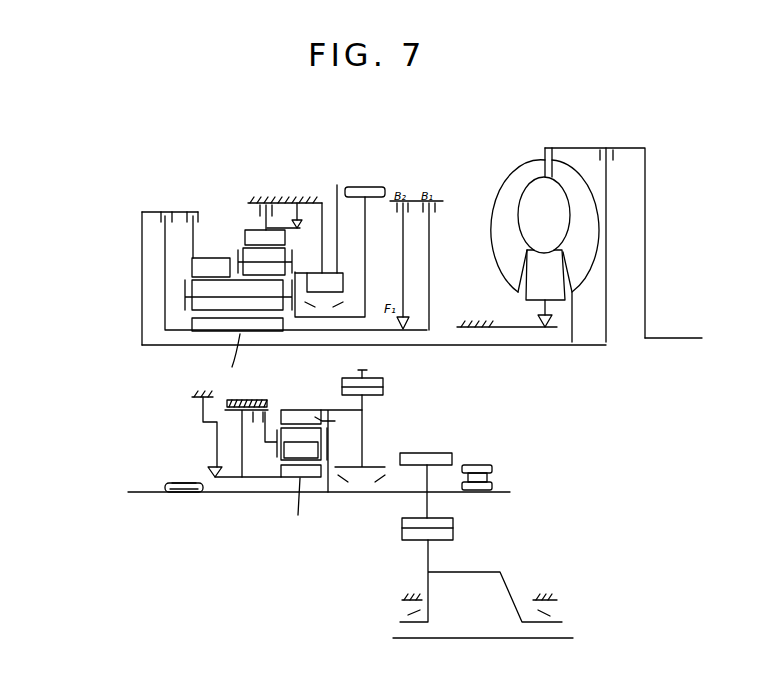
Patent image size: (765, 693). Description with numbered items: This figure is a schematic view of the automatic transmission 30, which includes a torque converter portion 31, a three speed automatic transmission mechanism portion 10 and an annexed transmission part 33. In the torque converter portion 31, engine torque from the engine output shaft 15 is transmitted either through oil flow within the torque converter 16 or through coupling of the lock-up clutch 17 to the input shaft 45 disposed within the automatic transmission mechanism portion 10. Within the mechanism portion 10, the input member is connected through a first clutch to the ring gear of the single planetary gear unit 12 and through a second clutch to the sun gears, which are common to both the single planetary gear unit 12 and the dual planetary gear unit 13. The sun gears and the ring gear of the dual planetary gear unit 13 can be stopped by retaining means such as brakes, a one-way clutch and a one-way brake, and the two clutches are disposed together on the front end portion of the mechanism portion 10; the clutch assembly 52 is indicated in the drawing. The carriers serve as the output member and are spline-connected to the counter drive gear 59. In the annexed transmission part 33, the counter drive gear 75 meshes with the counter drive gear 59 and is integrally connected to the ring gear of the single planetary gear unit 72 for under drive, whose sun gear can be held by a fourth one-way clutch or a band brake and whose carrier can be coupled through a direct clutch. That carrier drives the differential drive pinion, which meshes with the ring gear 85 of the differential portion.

The three speed automatic transmission mechanism portion 10 is at (124, 302).
The single planetary gear unit 12 is at (215, 226).
The dual planetary gear unit 13 is at (241, 198).
The engine output shaft 15 is at (667, 337).
The torque converter 16 is at (522, 172).
The lock-up clutch 17 is at (612, 158).
The automatic transmission 30 is at (121, 195).
The torque converter portion 31 is at (575, 130).
The annexed transmission part 33 is at (133, 430).
The input shaft 45 is at (155, 346).
The clutch assembly 52 is at (158, 176).
The counter drive gear 59 is at (372, 178).
The single planetary gear unit for under drive 72 is at (305, 396).
The counter drive gear 75 is at (383, 390).
The ring gear 85 is at (445, 455).